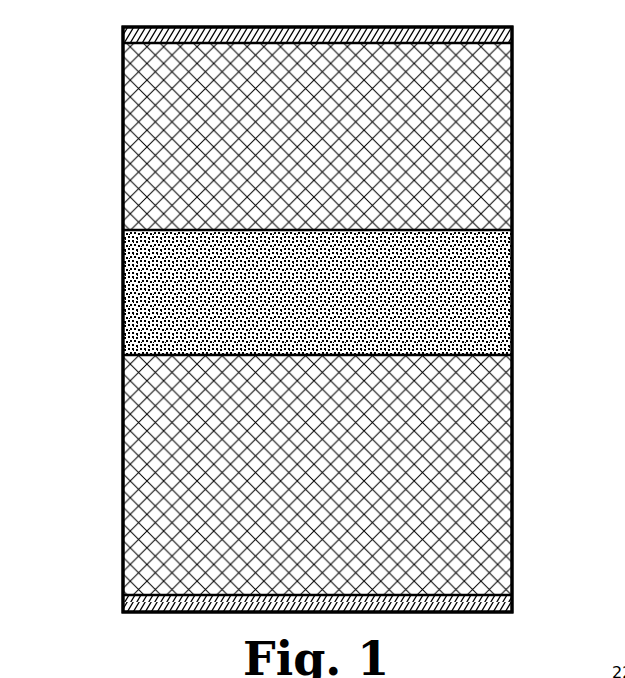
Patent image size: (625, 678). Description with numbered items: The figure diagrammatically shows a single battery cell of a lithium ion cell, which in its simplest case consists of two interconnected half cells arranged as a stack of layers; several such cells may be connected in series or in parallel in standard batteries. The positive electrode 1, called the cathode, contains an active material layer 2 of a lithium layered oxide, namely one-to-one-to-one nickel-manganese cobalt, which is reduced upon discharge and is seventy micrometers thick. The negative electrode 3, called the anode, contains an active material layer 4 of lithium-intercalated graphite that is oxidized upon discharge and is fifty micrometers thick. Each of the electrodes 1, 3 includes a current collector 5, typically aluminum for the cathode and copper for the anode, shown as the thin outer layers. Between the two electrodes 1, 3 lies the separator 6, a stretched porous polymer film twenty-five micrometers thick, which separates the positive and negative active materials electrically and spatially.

The positive electrode 1 is at (110, 552).
The active material layer 2 is at (477, 503).
The negative electrode 3 is at (112, 60).
The active material layer 4 is at (493, 175).
The current collector 5 is at (505, 40).
The separator 6 is at (475, 330).